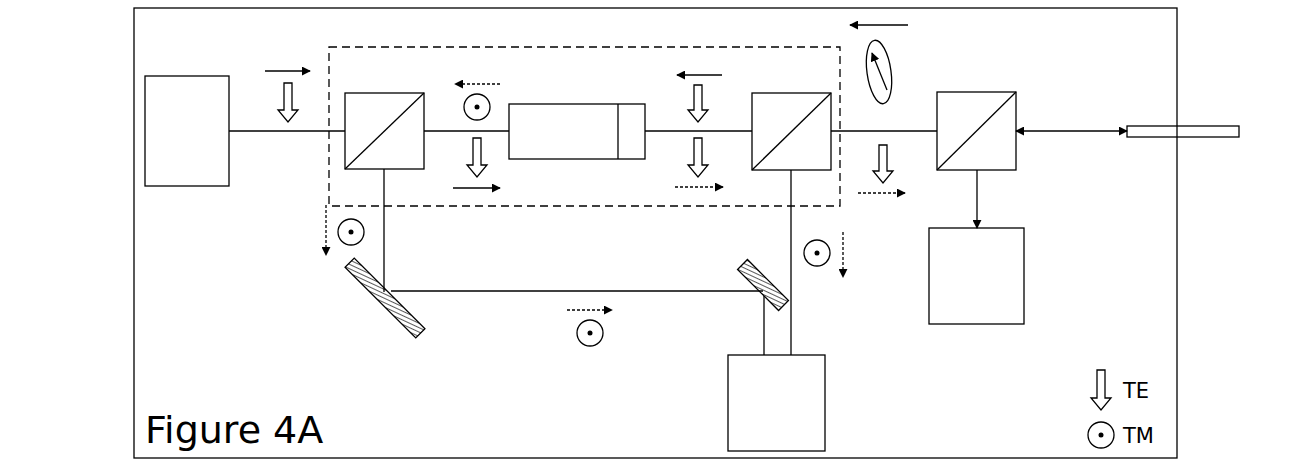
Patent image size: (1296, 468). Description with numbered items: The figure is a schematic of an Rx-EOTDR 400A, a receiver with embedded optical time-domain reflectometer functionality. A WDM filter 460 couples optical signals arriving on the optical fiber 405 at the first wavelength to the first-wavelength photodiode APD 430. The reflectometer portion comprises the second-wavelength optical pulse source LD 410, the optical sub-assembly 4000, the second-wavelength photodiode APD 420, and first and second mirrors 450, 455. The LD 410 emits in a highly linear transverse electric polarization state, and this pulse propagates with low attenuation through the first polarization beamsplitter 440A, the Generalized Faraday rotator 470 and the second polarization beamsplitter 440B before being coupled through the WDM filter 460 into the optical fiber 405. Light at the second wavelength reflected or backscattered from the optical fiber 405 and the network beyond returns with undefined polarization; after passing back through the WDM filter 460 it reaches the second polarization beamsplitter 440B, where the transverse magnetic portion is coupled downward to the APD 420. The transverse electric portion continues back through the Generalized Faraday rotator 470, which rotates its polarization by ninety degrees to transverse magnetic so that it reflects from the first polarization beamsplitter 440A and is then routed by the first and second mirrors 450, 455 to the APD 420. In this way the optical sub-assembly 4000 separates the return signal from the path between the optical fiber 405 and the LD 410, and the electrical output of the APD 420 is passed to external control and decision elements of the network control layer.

The Rx-EOTDR 400A is at (655, 233).
The optical sub-assembly 4000 is at (584, 110).
The optical fiber 405 is at (1145, 142).
The LD λ2 410 is at (187, 131).
The APD λ2 420 is at (776, 403).
The APD λ1 430 is at (976, 276).
The first polarization beamsplitter 440A is at (384, 115).
The second polarization beamsplitter 440B is at (791, 116).
The first mirror 450 is at (371, 298).
The second mirror 455 is at (742, 285).
The WDM filter 460 is at (976, 116).
The Generalized Faraday rotator 470 is at (577, 115).